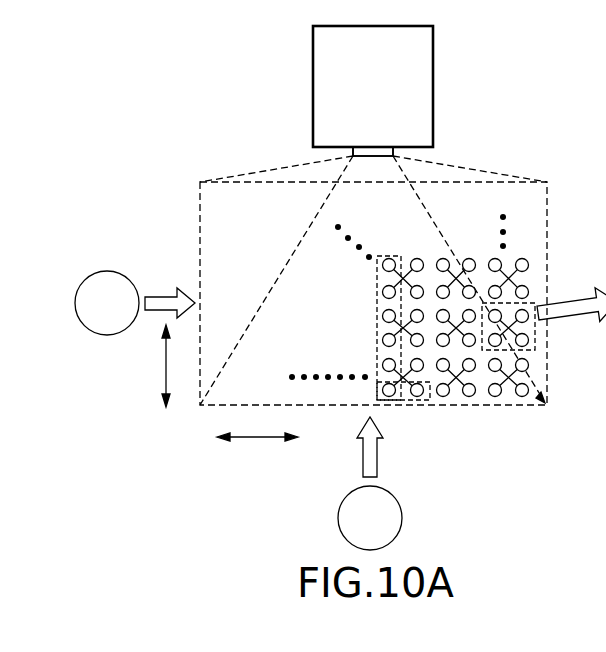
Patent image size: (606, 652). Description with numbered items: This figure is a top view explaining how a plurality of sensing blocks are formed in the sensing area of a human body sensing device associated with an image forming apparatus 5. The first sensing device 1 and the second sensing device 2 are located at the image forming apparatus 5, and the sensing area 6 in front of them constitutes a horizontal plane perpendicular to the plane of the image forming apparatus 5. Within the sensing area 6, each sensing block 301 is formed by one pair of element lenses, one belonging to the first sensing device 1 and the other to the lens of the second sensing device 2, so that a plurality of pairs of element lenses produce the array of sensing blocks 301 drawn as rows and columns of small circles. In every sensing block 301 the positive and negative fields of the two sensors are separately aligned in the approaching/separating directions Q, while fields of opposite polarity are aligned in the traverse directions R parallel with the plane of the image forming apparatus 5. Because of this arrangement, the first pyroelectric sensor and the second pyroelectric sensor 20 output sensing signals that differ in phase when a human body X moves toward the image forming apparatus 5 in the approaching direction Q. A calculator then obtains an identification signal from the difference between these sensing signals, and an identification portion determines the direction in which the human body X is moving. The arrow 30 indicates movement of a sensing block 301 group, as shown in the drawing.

The image forming apparatus 5 is at (433, 70).
The first sensing device 1 is at (393, 152).
The second sensing device 2 is at (373, 151).
The sensing area 6 is at (233, 203).
The second pyroelectric sensor 20 is at (491, 293).
The feed direction arrow 30 is at (605, 366).
The sensing block 301 is at (455, 388).
The human body X is at (107, 288).
The approaching/separating directions Q is at (162, 370).
The traverse directions R is at (265, 437).